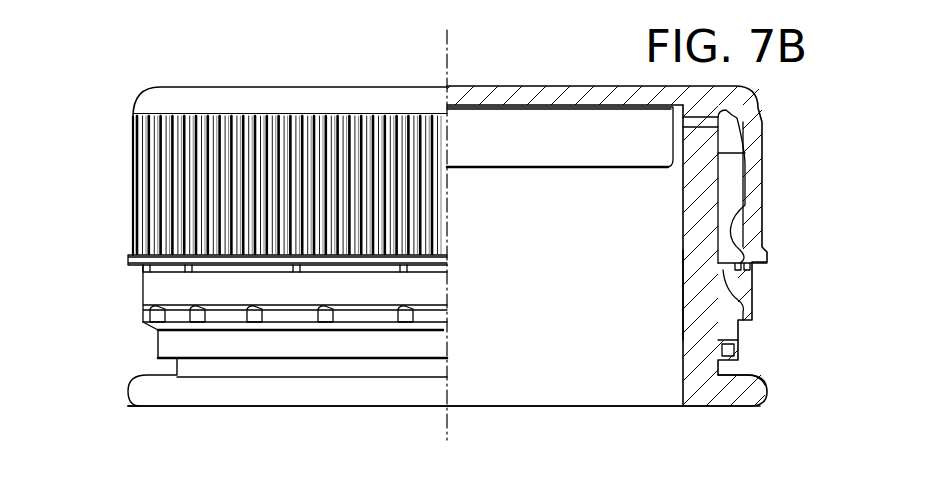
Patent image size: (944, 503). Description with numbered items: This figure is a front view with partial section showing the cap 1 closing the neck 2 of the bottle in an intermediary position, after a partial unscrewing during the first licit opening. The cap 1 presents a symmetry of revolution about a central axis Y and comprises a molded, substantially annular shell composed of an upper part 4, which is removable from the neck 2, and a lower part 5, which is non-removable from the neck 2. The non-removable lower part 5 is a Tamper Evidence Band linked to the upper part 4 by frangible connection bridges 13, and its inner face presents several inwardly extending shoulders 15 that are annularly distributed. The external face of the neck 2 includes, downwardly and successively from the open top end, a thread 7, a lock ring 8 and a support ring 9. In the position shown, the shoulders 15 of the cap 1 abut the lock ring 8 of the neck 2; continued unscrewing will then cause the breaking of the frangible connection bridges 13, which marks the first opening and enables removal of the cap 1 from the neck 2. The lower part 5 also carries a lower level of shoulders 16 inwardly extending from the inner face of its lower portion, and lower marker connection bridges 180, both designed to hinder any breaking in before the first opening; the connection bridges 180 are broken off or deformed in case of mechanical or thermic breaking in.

The cap 1 is at (778, 218).
The neck 2 is at (772, 403).
The upper part 4 is at (82, 88).
The lower part 5 is at (82, 272).
The thread 7 is at (727, 201).
The lock ring 8 is at (730, 296).
The support ring 9 is at (752, 392).
The frangible connection bridges 13 is at (293, 269).
The shoulders 15 is at (752, 306).
The shoulders 16 is at (740, 352).
The connection bridges 180 is at (195, 330).
The central axis Y is at (447, 67).